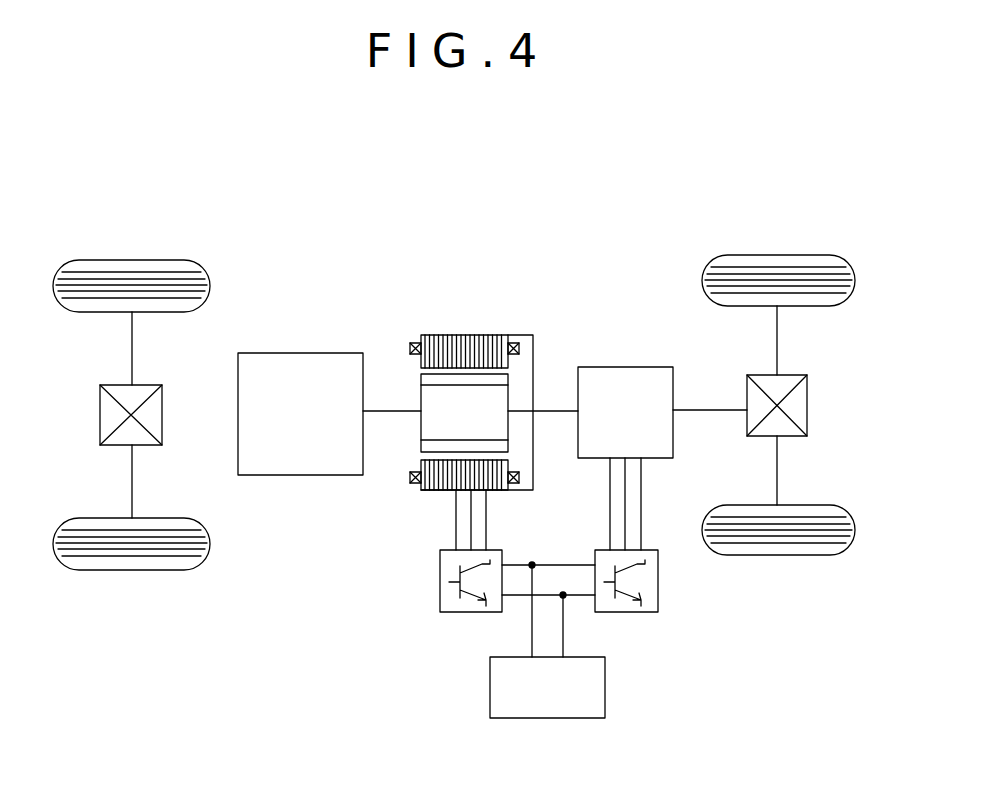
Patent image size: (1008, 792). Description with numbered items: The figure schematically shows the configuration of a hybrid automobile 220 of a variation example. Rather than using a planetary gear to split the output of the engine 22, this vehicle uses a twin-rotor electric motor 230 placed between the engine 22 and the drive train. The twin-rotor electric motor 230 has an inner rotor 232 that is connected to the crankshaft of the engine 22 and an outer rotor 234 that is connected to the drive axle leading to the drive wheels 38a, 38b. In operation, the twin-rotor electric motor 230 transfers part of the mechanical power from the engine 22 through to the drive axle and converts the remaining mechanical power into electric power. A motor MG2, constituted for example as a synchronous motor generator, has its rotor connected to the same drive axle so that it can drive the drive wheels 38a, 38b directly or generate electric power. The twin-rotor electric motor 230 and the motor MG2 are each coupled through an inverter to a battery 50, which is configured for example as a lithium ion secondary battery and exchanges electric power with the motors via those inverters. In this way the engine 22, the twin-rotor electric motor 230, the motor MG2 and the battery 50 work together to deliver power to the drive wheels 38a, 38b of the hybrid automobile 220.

The hybrid automobile 220 is at (580, 211).
The engine 22 is at (300, 353).
The twin-rotor electric motor 230 is at (383, 280).
The inner rotor 232 is at (422, 396).
The outer rotor 234 is at (475, 335).
The motor MG2 is at (621, 367).
The drive wheel 38a is at (778, 255).
The drive wheel 38b is at (777, 555).
The battery 50 is at (605, 688).